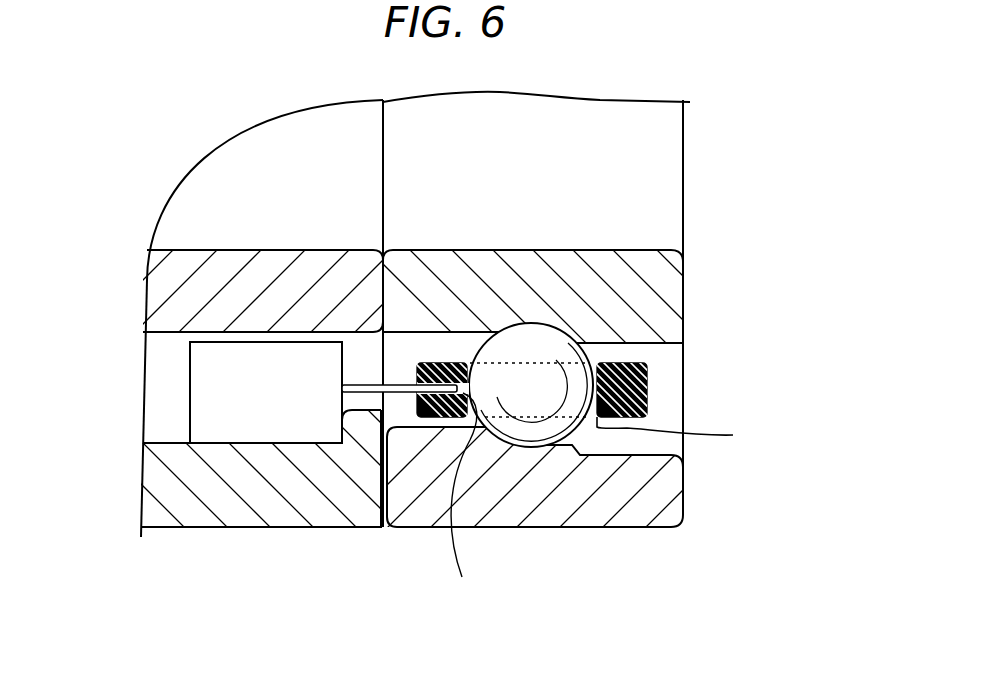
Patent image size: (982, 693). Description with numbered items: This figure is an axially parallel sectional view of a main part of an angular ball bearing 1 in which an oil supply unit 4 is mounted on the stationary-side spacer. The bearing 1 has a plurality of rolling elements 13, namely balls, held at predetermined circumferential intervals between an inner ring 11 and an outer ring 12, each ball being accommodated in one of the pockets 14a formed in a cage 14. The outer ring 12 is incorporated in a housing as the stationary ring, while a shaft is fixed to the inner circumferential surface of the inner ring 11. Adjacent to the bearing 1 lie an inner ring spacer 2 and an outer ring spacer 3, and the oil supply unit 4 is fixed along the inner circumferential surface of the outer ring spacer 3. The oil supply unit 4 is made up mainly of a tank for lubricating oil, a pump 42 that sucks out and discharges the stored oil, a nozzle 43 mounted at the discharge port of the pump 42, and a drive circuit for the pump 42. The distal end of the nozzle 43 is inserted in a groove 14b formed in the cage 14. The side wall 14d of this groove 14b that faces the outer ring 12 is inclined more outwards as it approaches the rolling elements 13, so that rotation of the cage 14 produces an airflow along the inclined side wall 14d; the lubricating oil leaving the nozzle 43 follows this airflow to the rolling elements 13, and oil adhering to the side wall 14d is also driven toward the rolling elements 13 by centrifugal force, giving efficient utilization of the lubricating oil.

The angular ball bearing 1 is at (633, 541).
The inner ring spacer 2 is at (262, 268).
The outer ring spacer 3 is at (282, 475).
The oil supply unit 4 is at (176, 413).
The inner ring 11 is at (558, 263).
The outer ring 12 is at (550, 505).
The rolling elements 13 is at (573, 358).
The cage 14 is at (648, 385).
The pockets 14a is at (687, 433).
The groove 14b is at (470, 365).
The side wall 14d is at (462, 503).
The pump 42 is at (255, 427).
The nozzle 43 is at (385, 402).